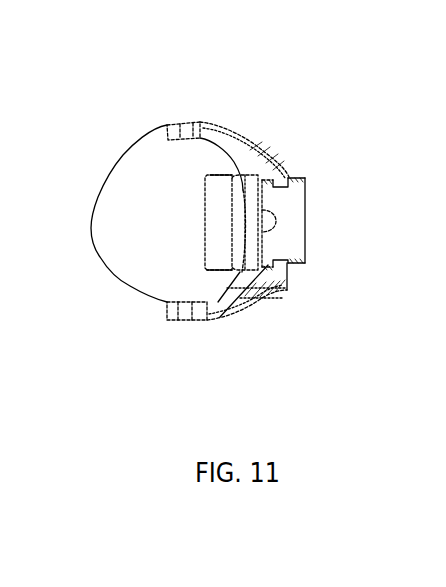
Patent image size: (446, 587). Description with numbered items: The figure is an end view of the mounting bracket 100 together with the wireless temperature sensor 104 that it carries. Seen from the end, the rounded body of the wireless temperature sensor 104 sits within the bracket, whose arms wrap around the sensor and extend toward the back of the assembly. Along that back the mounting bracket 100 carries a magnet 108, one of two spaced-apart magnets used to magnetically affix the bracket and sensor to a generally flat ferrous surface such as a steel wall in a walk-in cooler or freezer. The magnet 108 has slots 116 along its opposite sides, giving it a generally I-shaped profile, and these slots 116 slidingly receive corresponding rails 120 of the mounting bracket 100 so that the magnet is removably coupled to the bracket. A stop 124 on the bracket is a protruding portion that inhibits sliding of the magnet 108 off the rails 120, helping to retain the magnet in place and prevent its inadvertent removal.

The mounting bracket 100 is at (262, 104).
The wireless temperature sensor 104 is at (108, 290).
The magnet 108 is at (305, 203).
The slot 116 is at (285, 184).
The rail 120 is at (281, 262).
The stop 124 is at (273, 226).